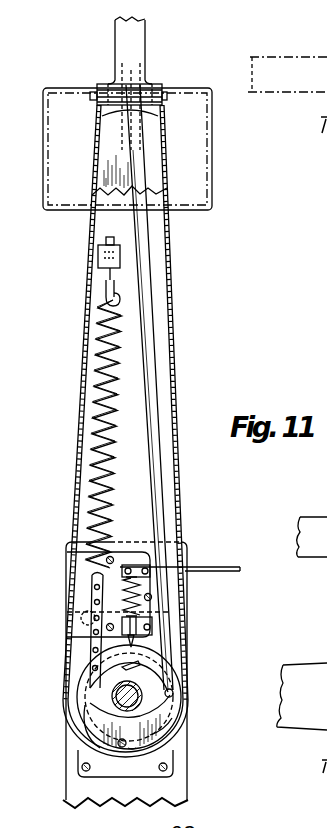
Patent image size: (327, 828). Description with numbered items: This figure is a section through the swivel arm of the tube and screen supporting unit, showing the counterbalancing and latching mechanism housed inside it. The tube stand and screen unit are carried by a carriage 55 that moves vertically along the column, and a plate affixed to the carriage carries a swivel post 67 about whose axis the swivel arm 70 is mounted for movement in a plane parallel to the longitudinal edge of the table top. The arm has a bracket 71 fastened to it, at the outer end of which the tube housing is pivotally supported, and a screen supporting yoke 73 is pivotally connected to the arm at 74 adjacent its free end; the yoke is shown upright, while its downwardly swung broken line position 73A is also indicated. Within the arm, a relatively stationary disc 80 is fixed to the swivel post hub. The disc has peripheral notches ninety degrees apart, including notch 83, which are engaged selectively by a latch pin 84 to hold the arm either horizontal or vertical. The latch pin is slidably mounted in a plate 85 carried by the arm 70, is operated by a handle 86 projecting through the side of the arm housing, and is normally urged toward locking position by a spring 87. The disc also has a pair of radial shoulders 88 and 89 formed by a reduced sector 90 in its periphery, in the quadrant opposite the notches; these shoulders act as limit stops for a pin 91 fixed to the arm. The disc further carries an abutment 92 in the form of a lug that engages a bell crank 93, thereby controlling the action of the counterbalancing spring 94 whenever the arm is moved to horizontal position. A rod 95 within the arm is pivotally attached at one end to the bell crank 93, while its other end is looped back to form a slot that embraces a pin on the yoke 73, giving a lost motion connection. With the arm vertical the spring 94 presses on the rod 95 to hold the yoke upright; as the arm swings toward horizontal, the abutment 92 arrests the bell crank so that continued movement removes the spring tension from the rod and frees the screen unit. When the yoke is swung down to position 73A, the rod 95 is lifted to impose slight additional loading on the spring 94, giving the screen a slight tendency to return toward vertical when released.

The carriage 55 is at (187, 770).
The swivel post 67 is at (117, 698).
The swivel arm 70 is at (168, 252).
The bracket 71 is at (317, 665).
The screen supporting yoke 73 is at (147, 37).
The broken line position of arm 73A is at (310, 55).
The pivotal connection 74 is at (165, 100).
The disc 80 is at (173, 673).
The peripheral notch 83 is at (172, 698).
The latch pin 84 is at (130, 618).
The plate 85 is at (148, 552).
The handle 86 is at (211, 566).
The spring 87 is at (137, 590).
The radial shoulder 88 is at (93, 693).
The radial shoulder 89 is at (130, 747).
The reduced sector 90 is at (97, 720).
The pin 91 is at (120, 743).
The abutment 92 is at (130, 665).
The bell crank 93 is at (167, 730).
The counterbalancing spring 94 is at (100, 333).
The rod 95 is at (150, 325).